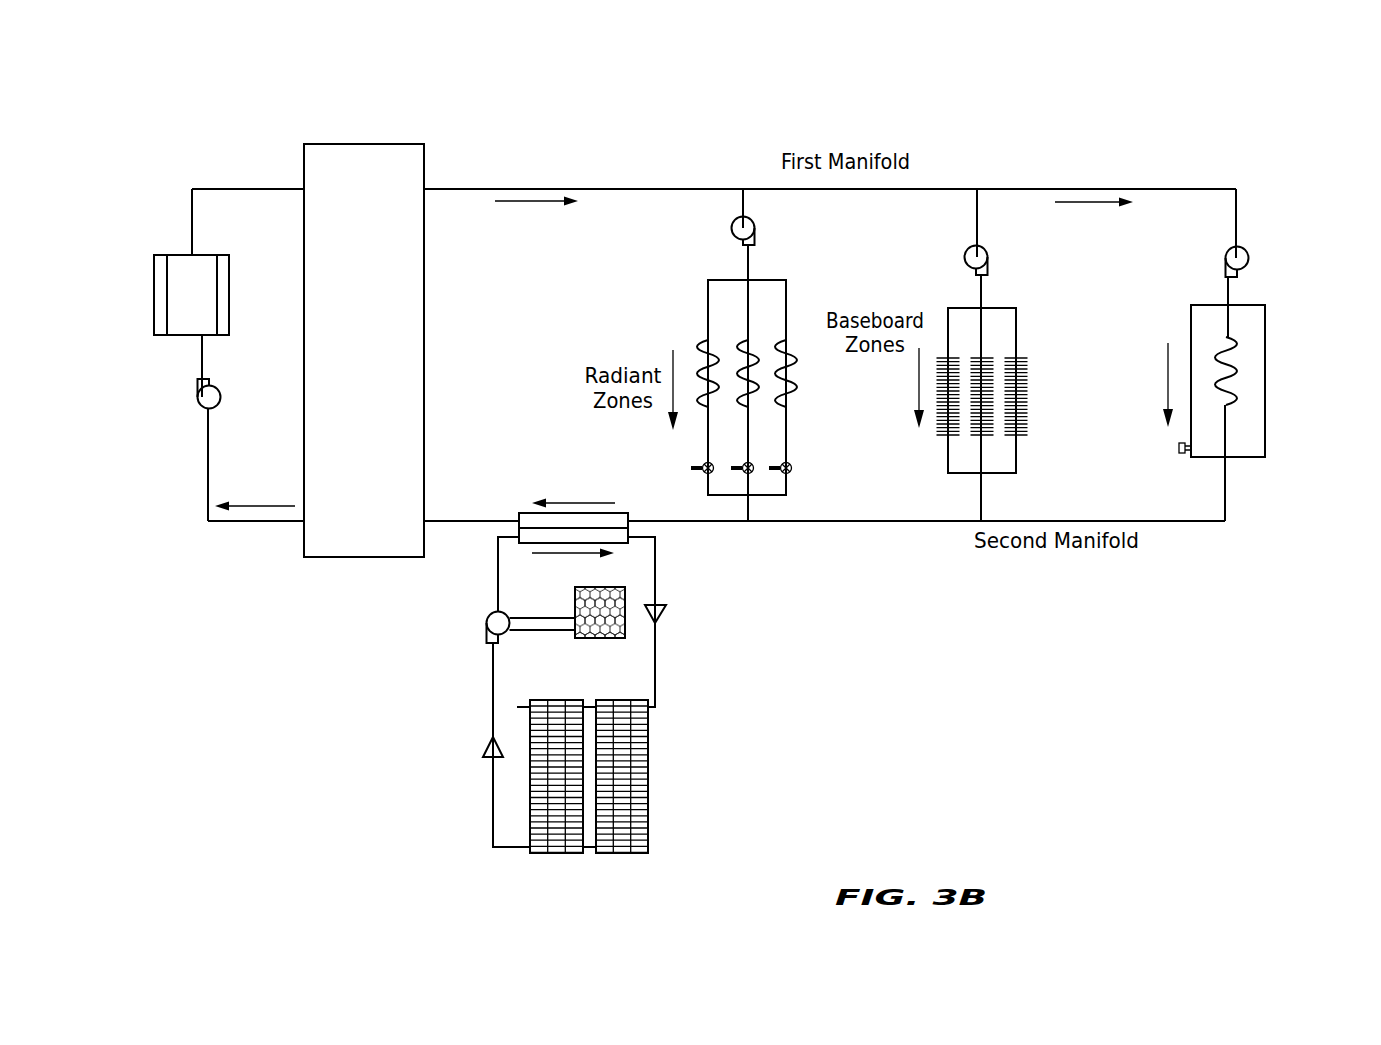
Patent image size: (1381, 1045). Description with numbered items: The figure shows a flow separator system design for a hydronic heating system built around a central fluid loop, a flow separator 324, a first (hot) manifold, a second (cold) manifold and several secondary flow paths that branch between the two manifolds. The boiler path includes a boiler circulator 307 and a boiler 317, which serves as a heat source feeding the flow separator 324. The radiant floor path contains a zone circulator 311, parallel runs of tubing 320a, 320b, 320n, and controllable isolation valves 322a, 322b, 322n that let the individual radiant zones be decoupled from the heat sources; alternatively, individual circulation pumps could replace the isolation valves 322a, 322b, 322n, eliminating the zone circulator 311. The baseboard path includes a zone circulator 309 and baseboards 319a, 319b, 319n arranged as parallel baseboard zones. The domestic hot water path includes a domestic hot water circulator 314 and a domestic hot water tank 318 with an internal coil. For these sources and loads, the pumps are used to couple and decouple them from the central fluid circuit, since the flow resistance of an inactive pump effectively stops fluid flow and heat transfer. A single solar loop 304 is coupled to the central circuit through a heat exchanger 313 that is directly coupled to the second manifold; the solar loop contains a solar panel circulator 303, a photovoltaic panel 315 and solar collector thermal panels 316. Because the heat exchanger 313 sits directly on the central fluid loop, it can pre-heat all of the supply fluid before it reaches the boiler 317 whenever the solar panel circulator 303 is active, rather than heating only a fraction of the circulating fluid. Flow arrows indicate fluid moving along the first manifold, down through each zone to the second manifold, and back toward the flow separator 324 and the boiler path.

The solar panel circulator 303 is at (486, 625).
The solar loop 304 is at (656, 668).
The boiler circulator 307 is at (197, 389).
The zone circulator 309 is at (988, 253).
The zone circulator 311 is at (731, 223).
The heat exchanger 313 is at (519, 515).
The domestic hot water circulator 314 is at (1227, 250).
The photovoltaic panel 315 is at (625, 595).
The solar collector thermal panels 316 is at (648, 782).
The boiler 317 is at (175, 308).
The domestic hot water tank 318 is at (1265, 419).
The baseboard 319a is at (946, 435).
The baseboard 319b is at (978, 358).
The baseboard 319n is at (1016, 360).
The tubing 320a is at (783, 339).
The tubing 320b is at (742, 339).
The tubing 320n is at (702, 341).
The controllable isolation valve 322a is at (773, 466).
The controllable isolation valve 322b is at (737, 466).
The controllable isolation valve 322n is at (701, 467).
The flow separator 324 is at (347, 405).